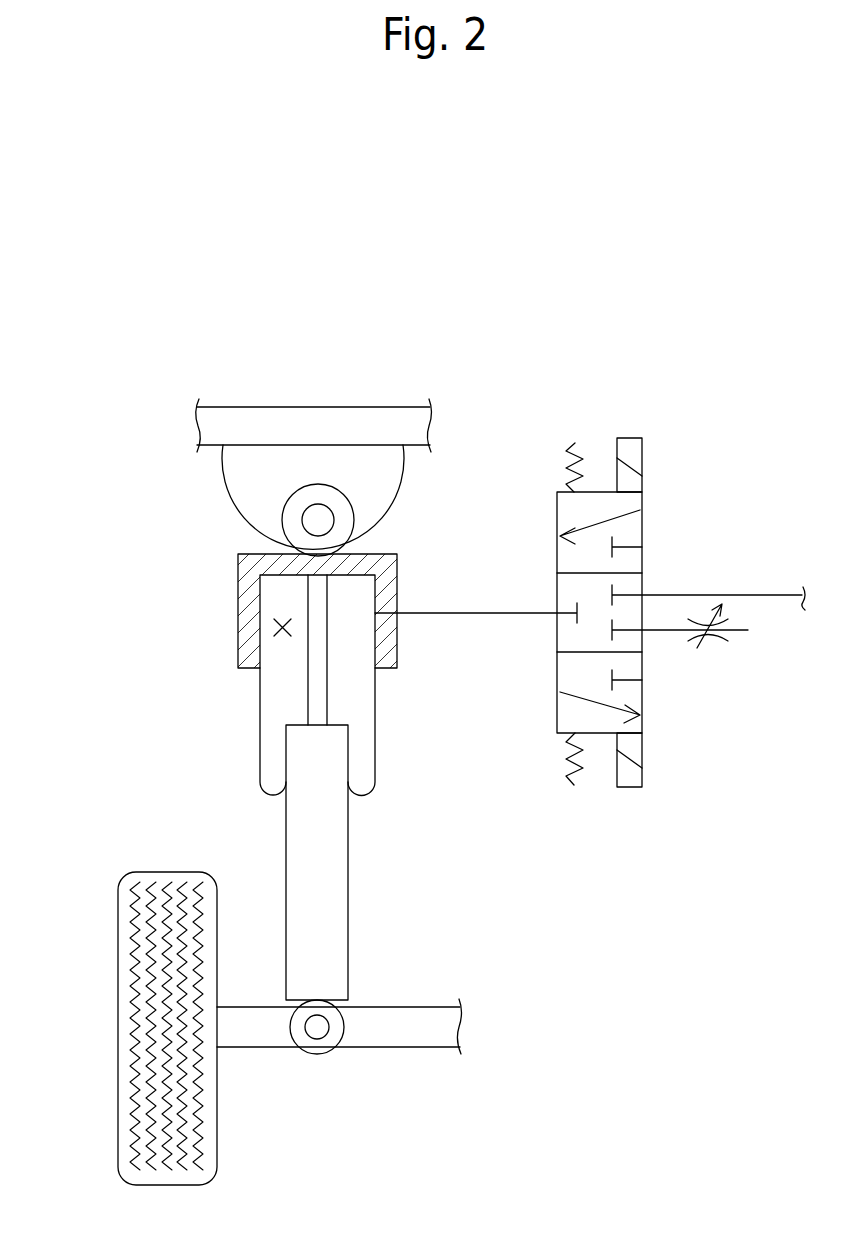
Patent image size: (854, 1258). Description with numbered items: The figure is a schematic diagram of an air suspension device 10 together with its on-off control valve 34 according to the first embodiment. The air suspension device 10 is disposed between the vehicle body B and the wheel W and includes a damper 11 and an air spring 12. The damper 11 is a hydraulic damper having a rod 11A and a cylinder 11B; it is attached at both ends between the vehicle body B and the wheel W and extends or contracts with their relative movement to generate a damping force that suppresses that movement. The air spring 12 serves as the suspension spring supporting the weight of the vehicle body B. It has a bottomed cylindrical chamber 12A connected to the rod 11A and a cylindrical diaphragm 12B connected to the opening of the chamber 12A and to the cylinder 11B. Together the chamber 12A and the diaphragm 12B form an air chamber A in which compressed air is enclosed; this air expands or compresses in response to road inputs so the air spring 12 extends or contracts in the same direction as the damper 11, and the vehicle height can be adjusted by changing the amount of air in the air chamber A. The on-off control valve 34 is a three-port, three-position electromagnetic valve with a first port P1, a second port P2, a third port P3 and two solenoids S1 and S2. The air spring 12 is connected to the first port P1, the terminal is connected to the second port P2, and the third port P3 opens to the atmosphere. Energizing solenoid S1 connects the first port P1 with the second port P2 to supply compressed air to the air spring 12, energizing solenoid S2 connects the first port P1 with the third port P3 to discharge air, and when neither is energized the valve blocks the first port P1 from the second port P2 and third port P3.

The air suspension device 10 is at (80, 638).
The damper 11 is at (210, 834).
The rod 11A is at (328, 695).
The cylinder 11B is at (348, 870).
The air spring 12 is at (198, 690).
The chamber 12A is at (238, 600).
The diaphragm 12B is at (258, 733).
The on-off control valve 34 is at (681, 578).
The air chamber A is at (268, 629).
The vehicle body B is at (332, 405).
The wheel W is at (118, 1075).
The first port P1 is at (476, 601).
The second port P2 is at (708, 587).
The third port P3 is at (680, 636).
The solenoid S1 is at (629, 445).
The solenoid S2 is at (629, 779).